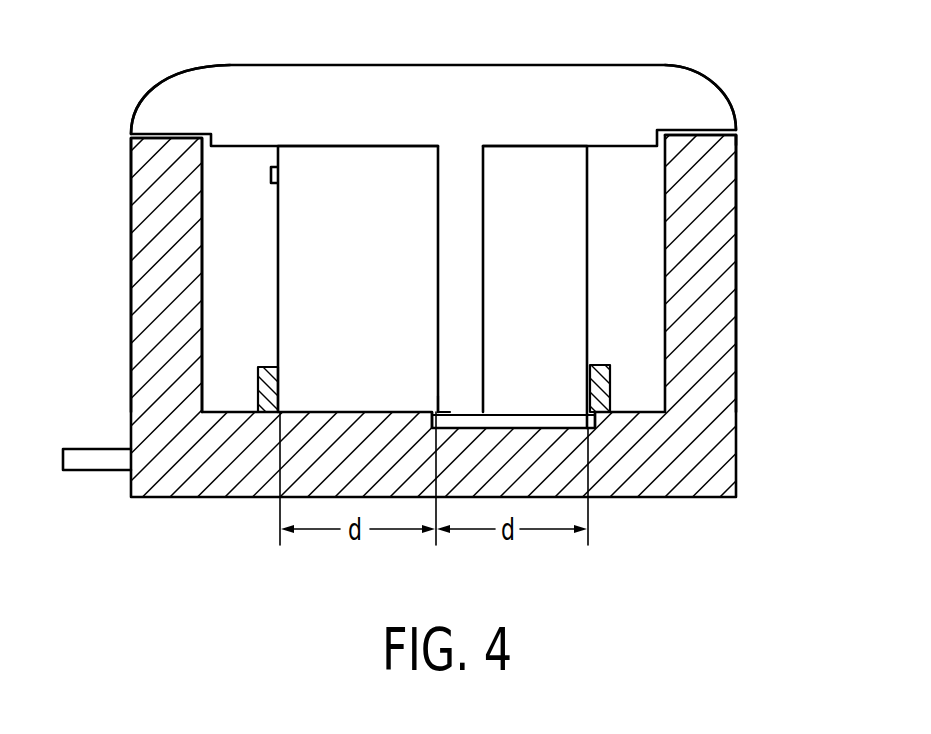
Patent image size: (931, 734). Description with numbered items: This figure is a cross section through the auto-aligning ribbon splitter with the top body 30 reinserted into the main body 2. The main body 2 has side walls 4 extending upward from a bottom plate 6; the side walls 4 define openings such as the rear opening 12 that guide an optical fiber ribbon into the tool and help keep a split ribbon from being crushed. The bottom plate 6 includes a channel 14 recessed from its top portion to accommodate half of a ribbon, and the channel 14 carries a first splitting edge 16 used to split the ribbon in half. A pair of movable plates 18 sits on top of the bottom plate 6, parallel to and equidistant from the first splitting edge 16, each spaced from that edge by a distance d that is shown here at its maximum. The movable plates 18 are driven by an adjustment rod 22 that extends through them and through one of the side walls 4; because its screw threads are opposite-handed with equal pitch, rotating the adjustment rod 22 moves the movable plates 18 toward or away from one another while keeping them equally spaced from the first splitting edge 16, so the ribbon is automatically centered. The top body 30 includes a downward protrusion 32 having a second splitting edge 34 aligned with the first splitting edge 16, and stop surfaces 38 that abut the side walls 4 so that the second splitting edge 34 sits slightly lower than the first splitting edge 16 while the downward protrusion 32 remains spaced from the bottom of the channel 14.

The main body 2 is at (768, 145).
The side walls 4 is at (142, 185).
The bottom plate 6 is at (658, 463).
The rear opening 12 is at (340, 243).
The channel 14 is at (555, 418).
The first splitting edge 16 is at (432, 410).
The movable plates 18 is at (260, 363).
The adjustment rod 22 is at (98, 458).
The top body 30 is at (613, 76).
The downward protrusion 32 is at (470, 286).
The second splitting edge 34 is at (442, 410).
The stop surfaces 38 is at (168, 132).